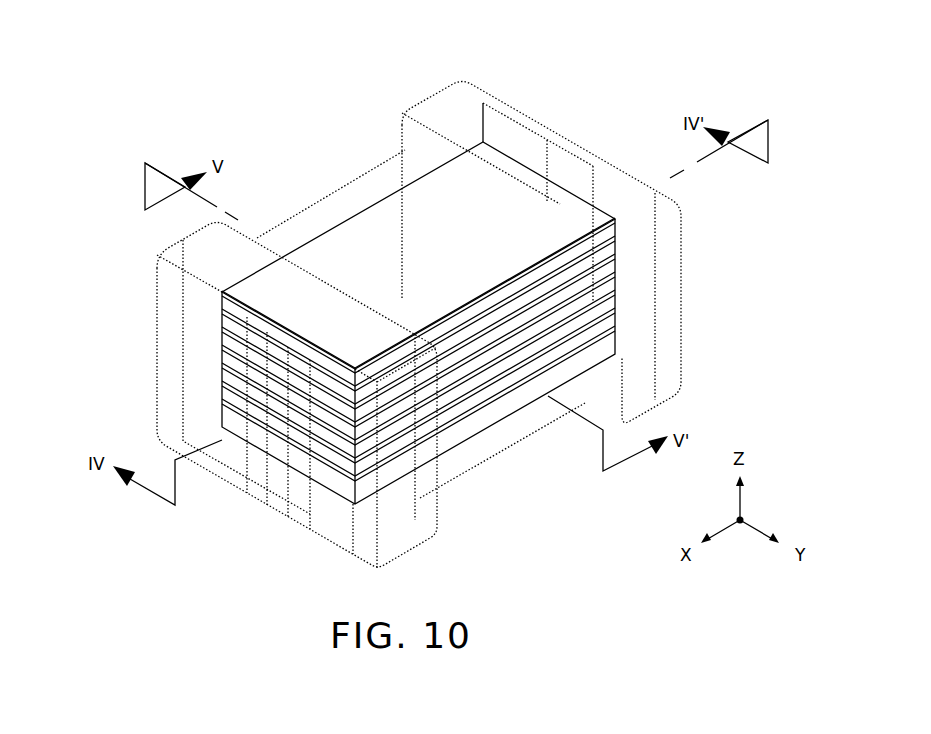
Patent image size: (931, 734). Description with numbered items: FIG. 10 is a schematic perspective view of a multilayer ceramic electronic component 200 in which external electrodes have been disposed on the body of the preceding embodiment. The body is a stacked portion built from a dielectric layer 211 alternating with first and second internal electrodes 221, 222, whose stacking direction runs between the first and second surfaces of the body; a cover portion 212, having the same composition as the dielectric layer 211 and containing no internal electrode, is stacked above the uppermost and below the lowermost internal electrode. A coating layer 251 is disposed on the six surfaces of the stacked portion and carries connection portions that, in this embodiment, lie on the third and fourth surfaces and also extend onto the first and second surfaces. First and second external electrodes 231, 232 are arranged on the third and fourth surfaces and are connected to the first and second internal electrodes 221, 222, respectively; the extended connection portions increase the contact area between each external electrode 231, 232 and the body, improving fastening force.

The multilayer capacitor 200 is at (258, 81).
The dielectric layer 211 is at (615, 288).
The cover layer 212 is at (615, 243).
The first internal electrode 221 is at (615, 265).
The second internal electrode 222 is at (615, 315).
The first external electrode 231 is at (158, 331).
The second external electrode 232 is at (444, 108).
The insulating layer 251 is at (308, 206).